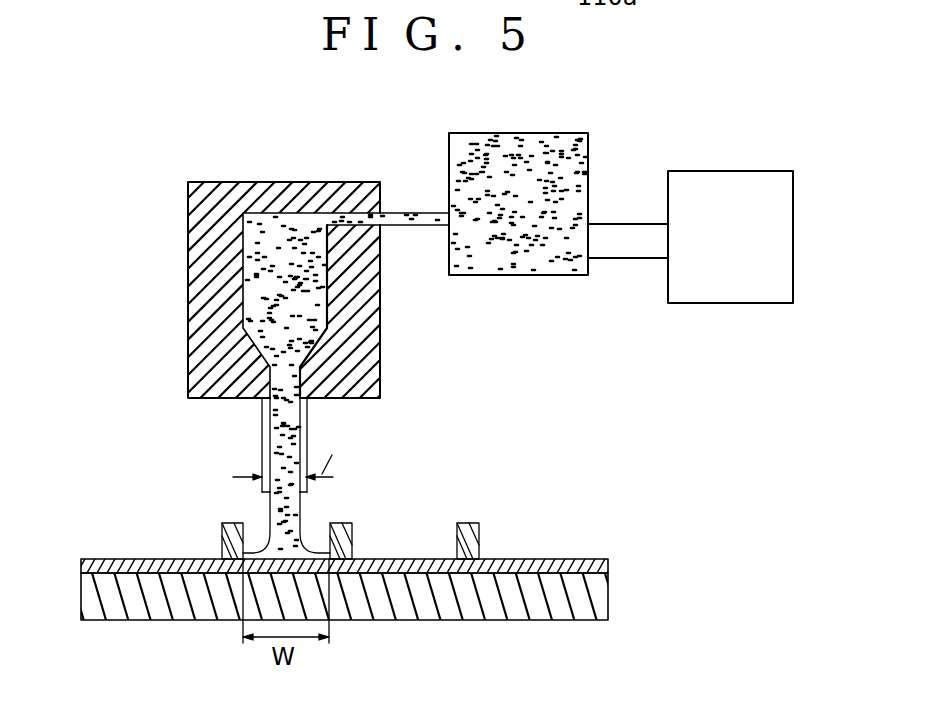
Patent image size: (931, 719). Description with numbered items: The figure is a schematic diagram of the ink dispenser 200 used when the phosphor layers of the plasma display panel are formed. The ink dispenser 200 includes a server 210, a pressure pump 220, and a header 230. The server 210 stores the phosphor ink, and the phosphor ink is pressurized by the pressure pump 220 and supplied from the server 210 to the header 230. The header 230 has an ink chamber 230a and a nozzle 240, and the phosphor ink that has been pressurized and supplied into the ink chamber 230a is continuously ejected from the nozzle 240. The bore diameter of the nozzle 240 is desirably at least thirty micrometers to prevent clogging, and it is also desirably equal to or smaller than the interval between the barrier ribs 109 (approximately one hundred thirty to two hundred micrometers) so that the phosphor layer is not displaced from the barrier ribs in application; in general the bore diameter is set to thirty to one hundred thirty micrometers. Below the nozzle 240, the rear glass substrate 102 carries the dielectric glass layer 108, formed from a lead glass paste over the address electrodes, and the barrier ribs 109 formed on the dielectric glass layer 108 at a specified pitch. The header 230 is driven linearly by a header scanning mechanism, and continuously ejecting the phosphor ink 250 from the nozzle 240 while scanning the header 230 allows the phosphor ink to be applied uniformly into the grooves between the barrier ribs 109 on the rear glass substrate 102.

The ink dispenser 200 is at (382, 160).
The header 230 is at (380, 371).
The ink chamber 230a is at (252, 280).
The nozzle 240 is at (262, 452).
The phosphor ink 250 is at (305, 528).
The pressure pump 220 is at (525, 273).
The server 210 is at (733, 303).
The barrier ribs 109 is at (223, 532).
The dielectric glass layer 108 is at (609, 565).
The rear glass substrate 102 is at (608, 588).